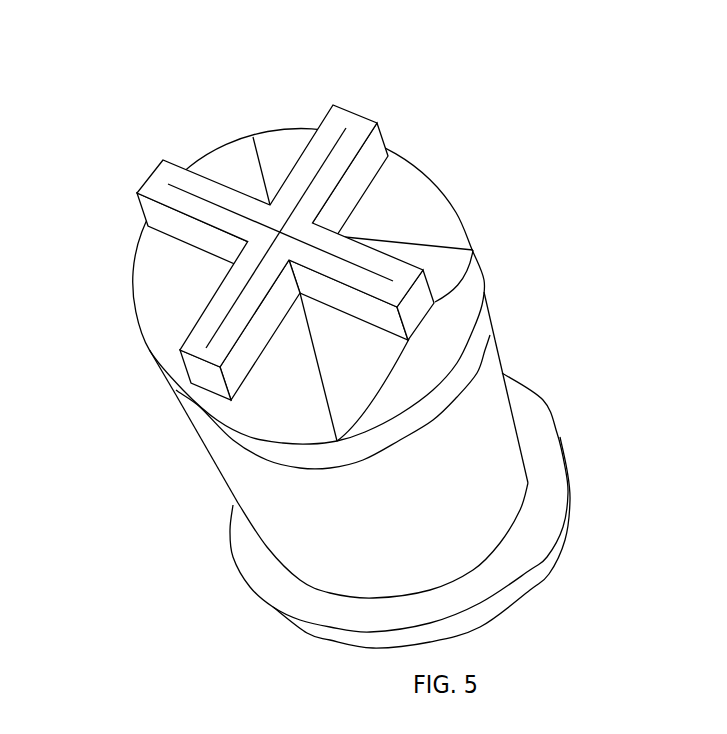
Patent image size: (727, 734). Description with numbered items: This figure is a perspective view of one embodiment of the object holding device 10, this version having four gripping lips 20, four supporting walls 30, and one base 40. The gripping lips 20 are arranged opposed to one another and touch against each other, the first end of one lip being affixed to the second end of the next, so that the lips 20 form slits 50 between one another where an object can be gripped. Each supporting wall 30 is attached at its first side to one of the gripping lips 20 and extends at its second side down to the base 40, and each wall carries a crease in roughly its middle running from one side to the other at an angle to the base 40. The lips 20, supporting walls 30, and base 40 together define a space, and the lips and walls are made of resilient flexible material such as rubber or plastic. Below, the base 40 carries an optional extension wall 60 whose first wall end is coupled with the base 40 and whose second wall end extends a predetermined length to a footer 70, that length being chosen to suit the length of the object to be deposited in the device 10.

The object holding device 10 is at (227, 96).
The gripping lips 20 is at (173, 177).
The supporting wall 30 is at (443, 220).
The base 40 is at (462, 373).
The slit 50 is at (210, 200).
The extension wall 60 is at (480, 423).
The footer 70 is at (527, 523).